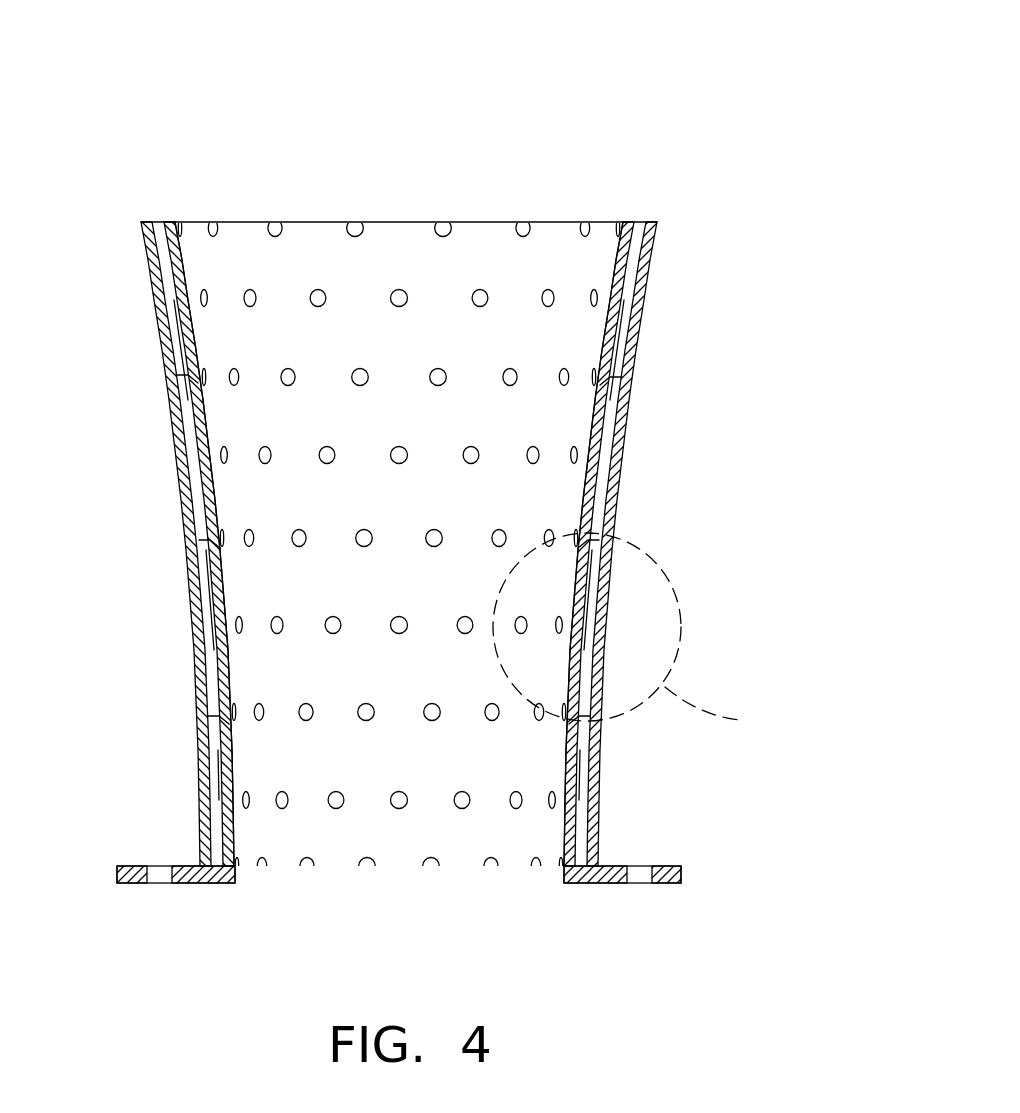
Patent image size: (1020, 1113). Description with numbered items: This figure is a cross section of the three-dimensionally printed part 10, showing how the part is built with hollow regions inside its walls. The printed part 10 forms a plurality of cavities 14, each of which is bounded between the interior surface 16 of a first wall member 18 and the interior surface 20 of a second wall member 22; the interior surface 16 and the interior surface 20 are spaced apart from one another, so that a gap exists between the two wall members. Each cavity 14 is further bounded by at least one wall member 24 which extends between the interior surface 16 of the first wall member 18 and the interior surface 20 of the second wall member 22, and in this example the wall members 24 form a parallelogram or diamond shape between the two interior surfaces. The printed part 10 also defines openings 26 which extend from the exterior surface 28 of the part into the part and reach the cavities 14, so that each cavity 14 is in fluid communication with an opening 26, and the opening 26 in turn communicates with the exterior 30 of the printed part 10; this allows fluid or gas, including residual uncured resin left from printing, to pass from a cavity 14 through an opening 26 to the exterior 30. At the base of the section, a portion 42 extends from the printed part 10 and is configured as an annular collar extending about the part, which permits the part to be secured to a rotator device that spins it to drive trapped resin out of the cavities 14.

The 3D printed part 10 is at (378, 90).
The cavity 14 is at (404, 532).
The interior surface of first wall member 16 is at (166, 290).
The first wall member 18 is at (178, 262).
The interior surface of second wall member 20 is at (196, 536).
The second wall member 22 is at (155, 252).
The wall member 24 is at (162, 242).
The opening 26 is at (392, 240).
The exterior surface 28 is at (480, 240).
The exterior 30 is at (410, 429).
The portion 42 is at (677, 867).